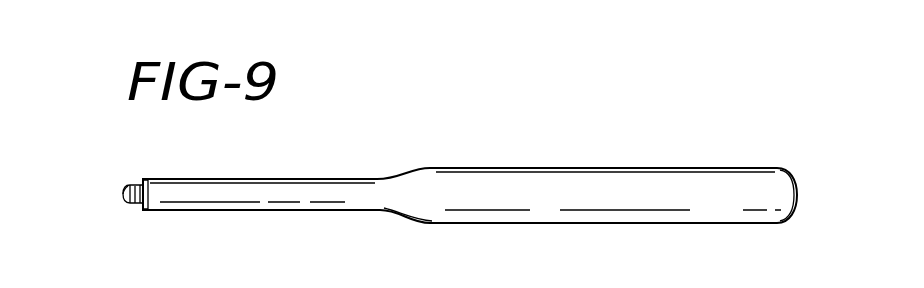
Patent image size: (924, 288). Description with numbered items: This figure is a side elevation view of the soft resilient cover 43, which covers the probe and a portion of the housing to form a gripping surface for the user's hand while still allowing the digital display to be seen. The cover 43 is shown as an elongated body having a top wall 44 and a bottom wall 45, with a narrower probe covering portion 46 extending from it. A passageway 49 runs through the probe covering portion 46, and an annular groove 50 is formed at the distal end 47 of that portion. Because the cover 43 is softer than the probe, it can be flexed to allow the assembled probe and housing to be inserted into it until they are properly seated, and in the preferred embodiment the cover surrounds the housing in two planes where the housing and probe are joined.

The soft resilient cover 43 is at (618, 152).
The top wall 44 is at (502, 168).
The bottom wall 45 is at (430, 223).
The probe covering portion 46 is at (272, 180).
The distal end 47 is at (192, 212).
The passageway 49 is at (123, 195).
The annular groove 50 is at (130, 182).